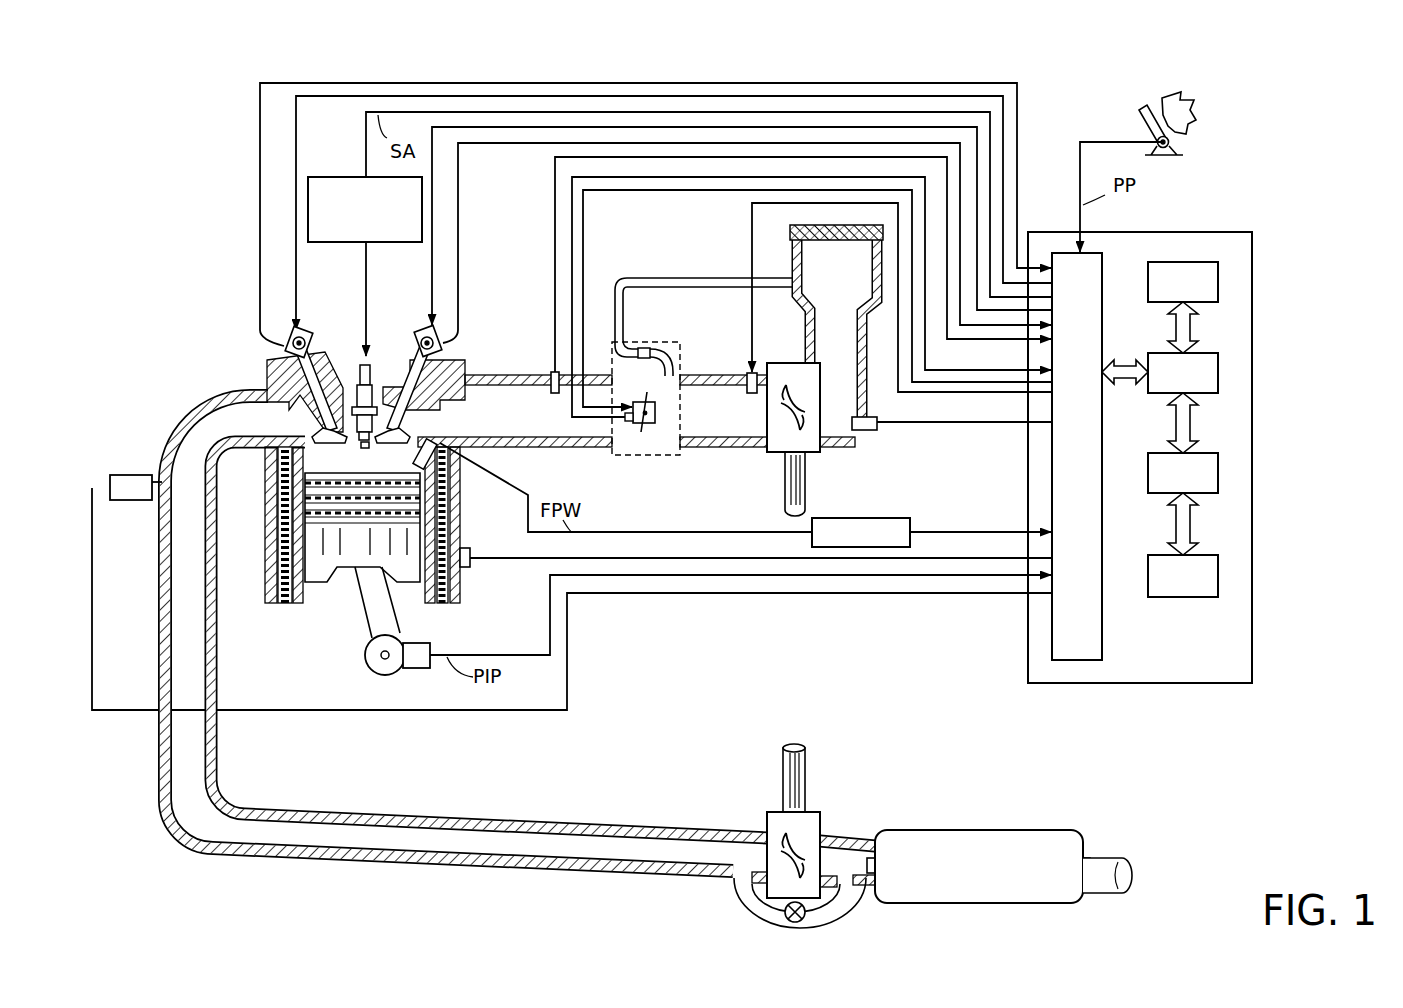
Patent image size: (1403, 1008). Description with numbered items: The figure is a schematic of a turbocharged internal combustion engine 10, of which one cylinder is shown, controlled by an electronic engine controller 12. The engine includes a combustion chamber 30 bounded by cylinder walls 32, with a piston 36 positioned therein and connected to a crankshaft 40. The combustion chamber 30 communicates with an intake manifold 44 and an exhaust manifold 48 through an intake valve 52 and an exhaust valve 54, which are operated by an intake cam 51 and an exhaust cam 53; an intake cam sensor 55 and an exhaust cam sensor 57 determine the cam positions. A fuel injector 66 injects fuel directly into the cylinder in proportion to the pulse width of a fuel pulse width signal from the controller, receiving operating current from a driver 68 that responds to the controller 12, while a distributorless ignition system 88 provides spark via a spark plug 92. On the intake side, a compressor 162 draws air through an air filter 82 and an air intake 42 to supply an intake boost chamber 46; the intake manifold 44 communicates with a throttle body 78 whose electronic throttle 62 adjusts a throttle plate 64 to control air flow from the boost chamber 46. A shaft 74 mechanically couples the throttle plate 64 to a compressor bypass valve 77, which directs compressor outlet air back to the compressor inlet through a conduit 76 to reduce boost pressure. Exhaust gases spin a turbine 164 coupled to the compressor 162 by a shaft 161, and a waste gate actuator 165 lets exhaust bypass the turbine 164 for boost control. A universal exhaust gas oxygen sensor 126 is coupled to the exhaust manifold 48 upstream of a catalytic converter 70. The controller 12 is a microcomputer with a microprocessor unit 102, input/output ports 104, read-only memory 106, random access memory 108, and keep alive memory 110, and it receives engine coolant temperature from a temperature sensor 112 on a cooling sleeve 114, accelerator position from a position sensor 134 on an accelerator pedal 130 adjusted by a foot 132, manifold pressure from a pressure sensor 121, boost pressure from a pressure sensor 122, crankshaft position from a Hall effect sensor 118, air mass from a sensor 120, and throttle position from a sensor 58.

The internal combustion engine 10 is at (203, 311).
The electronic engine controller 12 is at (1242, 232).
The combustion chamber 30 is at (293, 552).
The cylinder walls 32 is at (307, 612).
The piston 36 is at (347, 553).
The crankshaft 40 is at (375, 670).
The air intake 42 is at (850, 341).
The intake manifold 44 is at (525, 428).
The intake boost chamber 46 is at (748, 421).
The exhaust manifold 48 is at (248, 431).
The intake cam 51 is at (417, 325).
The intake valve 52 is at (403, 427).
The exhaust cam 53 is at (305, 328).
The exhaust valve 54 is at (323, 432).
The intake cam sensor 55 is at (442, 343).
The exhaust cam sensor 57 is at (283, 346).
The throttle position sensor 58 is at (622, 420).
The electronic throttle 62 is at (650, 424).
The throttle plate 64 is at (641, 426).
The fuel injector 66 is at (442, 445).
The driver 68 is at (912, 543).
The catalytic converter 70 is at (910, 830).
The shaft 74 is at (632, 373).
The conduit 76 is at (690, 277).
The compressor bypass valve 77 is at (642, 348).
The throttle body 78 is at (672, 342).
The air filter 82 is at (862, 243).
The distributorless ignition system 88 is at (322, 177).
The spark plug 92 is at (368, 362).
The microprocessor unit 102 is at (1218, 372).
The input/output ports 104 is at (1102, 263).
The read-only memory 106 is at (1218, 282).
The random access memory 108 is at (1218, 470).
The keep alive memory 110 is at (1218, 573).
The temperature sensor 112 is at (470, 546).
The cooling sleeve 114 is at (457, 590).
The Hall effect sensor 118 is at (410, 670).
The air mass sensor 120 is at (870, 430).
The pressure sensor 121 is at (550, 365).
The pressure sensor 122 is at (745, 373).
The Universal Exhaust Gas Oxygen sensor 126 is at (110, 480).
The accelerator pedal 130 is at (1143, 120).
The foot 132 is at (1195, 107).
The position sensor 134 is at (1175, 142).
The shaft 161 is at (785, 490).
The compressor 162 is at (800, 362).
The turbine 164 is at (768, 812).
The waste gate actuator 165 is at (790, 917).